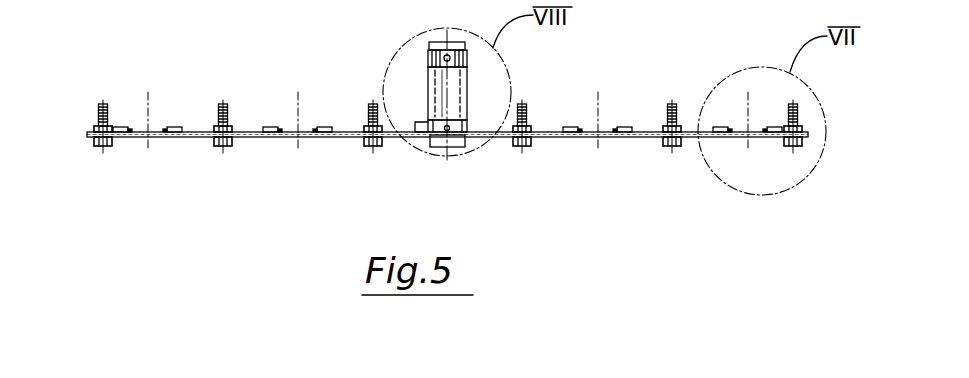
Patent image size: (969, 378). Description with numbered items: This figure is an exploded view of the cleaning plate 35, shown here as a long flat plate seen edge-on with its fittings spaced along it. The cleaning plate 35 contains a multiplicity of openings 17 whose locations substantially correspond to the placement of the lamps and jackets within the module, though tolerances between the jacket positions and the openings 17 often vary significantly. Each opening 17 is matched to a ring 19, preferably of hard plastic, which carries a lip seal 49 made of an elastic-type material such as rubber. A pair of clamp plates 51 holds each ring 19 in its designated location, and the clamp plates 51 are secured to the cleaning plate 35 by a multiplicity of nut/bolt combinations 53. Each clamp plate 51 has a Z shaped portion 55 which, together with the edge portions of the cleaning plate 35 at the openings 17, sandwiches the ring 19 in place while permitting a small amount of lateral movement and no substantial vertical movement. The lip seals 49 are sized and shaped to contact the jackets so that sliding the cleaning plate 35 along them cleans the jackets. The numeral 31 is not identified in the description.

The opening 17 is at (293, 137).
The ring 19 is at (733, 136).
The frame 31 is at (695, 6).
The cleaning plate 35 is at (538, 184).
The lip seal 49 is at (745, 134).
The clamp plate 51 is at (645, 133).
The nut/bolt combination 53 is at (100, 130).
The Z shaped portion 55 is at (270, 127).